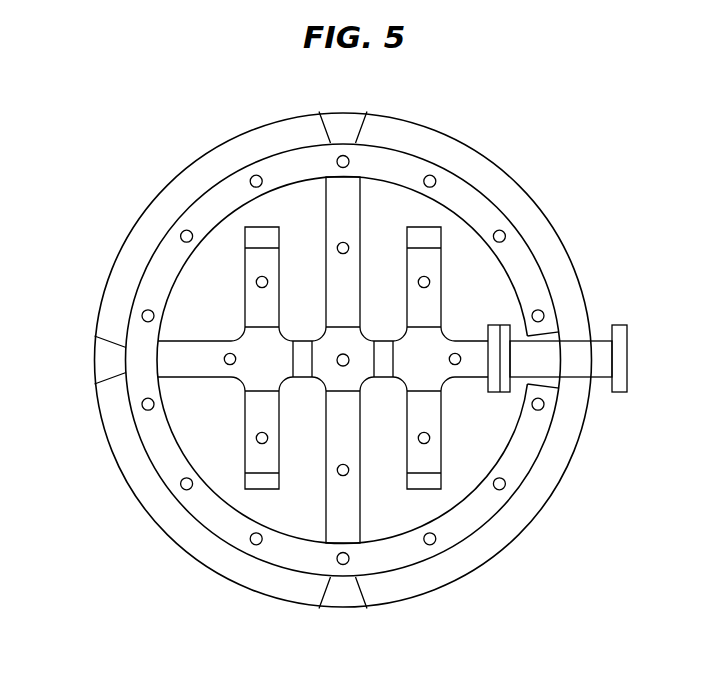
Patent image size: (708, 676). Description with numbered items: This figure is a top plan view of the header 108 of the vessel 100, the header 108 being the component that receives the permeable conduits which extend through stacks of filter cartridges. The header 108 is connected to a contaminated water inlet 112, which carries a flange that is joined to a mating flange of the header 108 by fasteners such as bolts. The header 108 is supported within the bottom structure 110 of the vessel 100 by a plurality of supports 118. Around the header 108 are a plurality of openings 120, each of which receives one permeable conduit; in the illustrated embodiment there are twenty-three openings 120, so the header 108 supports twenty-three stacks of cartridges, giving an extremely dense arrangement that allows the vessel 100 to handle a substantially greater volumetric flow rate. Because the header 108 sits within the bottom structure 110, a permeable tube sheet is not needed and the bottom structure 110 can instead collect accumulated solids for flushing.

The vessel 100 is at (468, 100).
The header 108 is at (495, 192).
The bottom structure 110 is at (578, 264).
The contaminated water inlet 112 is at (573, 338).
The supports 118 is at (341, 125).
The openings 120 is at (252, 175).